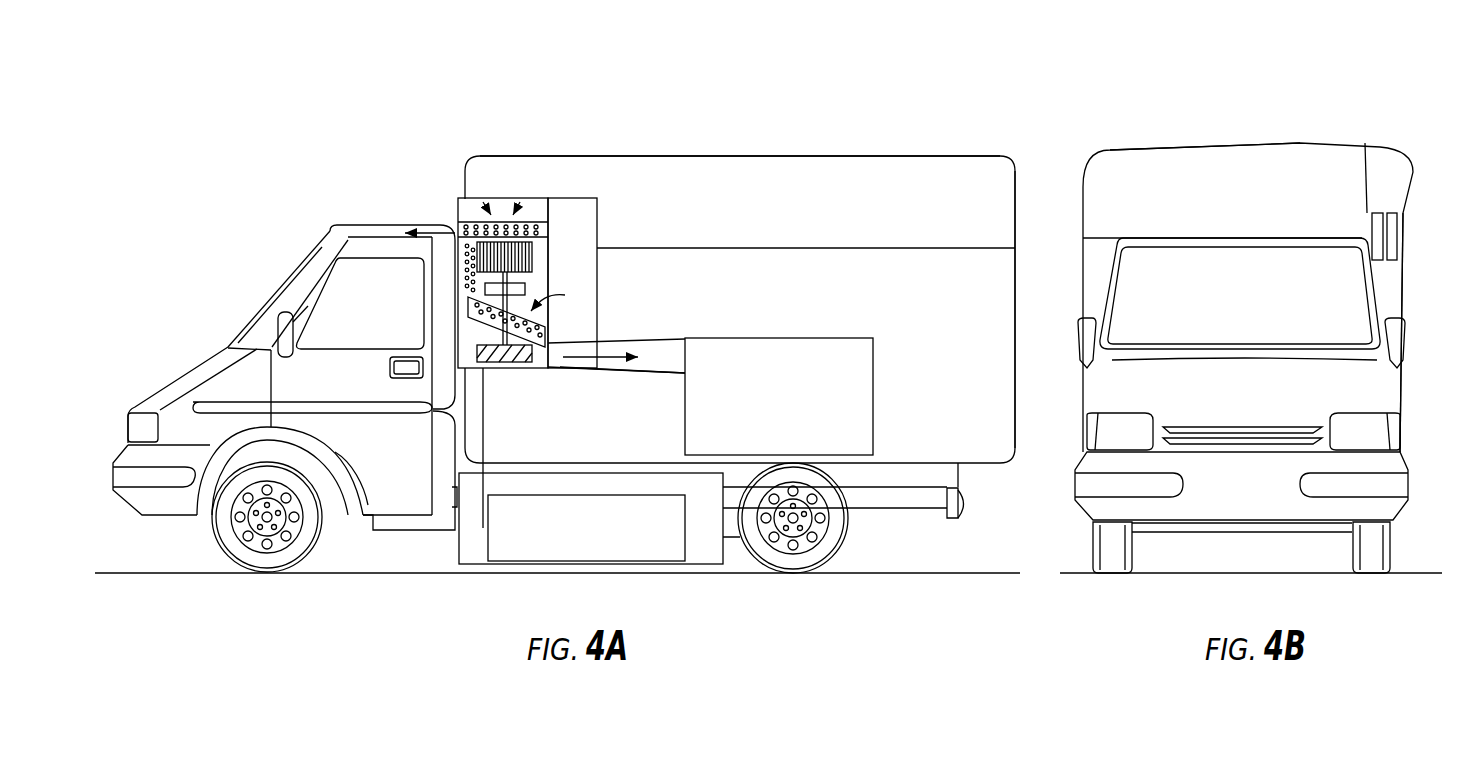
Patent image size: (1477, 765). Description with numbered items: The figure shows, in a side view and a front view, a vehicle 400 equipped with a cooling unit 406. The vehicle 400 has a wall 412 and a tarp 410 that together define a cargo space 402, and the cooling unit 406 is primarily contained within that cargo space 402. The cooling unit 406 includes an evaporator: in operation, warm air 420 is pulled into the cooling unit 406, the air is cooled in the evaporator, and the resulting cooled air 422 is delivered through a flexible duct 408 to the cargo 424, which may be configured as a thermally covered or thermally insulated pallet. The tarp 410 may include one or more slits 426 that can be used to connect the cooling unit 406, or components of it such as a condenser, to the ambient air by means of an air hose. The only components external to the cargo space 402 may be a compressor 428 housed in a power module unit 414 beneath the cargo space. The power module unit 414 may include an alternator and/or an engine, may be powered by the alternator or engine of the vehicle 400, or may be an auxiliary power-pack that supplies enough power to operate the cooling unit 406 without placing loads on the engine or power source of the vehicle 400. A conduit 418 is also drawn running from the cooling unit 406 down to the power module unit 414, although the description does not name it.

In FIG. 4A, the vehicle 400 is at (318, 184).
In FIG. 4B, the vehicle 400 is at (1074, 98).
In FIG. 4A, the cargo space 402 is at (893, 186).
In FIG. 4B, the cargo space 402 is at (1292, 167).
In FIG. 4A, the cooling unit 406 is at (627, 273).
In FIG. 4A, the flexible duct 408 is at (660, 353).
In FIG. 4A, the tarp 410 is at (633, 155).
In FIG. 4B, the tarp 410 is at (1118, 148).
In FIG. 4A, the wall 412 is at (993, 308).
In FIG. 4B, the wall 412 is at (1405, 290).
In FIG. 4A, the power module unit 414 is at (702, 535).
In FIG. 4A, the drain conduit 418 is at (478, 515).
In FIG. 4A, the warm air 420 is at (607, 221).
In FIG. 4A, the cooled air 422 is at (590, 358).
In FIG. 4A, the cargo 424 is at (795, 410).
In FIG. 4B, the slits 426 is at (1365, 143).
In FIG. 4A, the compressor 428 is at (555, 535).